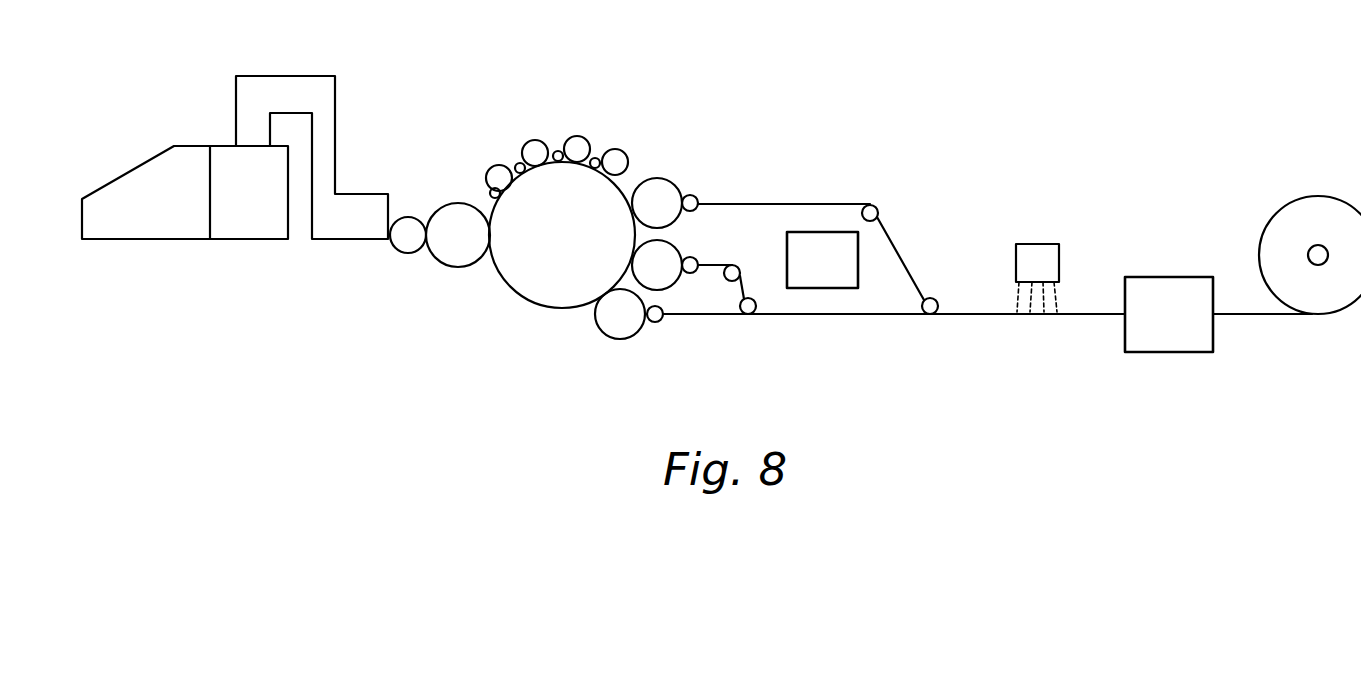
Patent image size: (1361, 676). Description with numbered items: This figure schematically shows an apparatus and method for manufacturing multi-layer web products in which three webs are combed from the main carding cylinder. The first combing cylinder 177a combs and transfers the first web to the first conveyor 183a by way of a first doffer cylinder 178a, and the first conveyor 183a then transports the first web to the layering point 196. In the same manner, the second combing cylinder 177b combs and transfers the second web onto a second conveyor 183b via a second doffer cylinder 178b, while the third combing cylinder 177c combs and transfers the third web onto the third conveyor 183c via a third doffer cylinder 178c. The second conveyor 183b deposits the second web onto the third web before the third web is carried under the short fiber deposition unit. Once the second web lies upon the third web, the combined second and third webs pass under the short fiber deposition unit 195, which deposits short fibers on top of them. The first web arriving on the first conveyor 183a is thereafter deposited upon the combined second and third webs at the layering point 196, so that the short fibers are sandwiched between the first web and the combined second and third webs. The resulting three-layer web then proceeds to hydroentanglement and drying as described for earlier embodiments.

The first combing cylinder 177a is at (665, 178).
The second combing cylinder 177b is at (673, 287).
The third combing cylinder 177c is at (614, 339).
The first doffer cylinder 178a is at (692, 195).
The second doffer cylinder 178b is at (692, 257).
The third doffer cylinder 178c is at (654, 322).
The first conveyor 183a is at (791, 204).
The second conveyor 183b is at (743, 284).
The third conveyor 183c is at (868, 314).
The short fiber deposition unit 195 is at (827, 232).
The layering point 196 is at (935, 320).